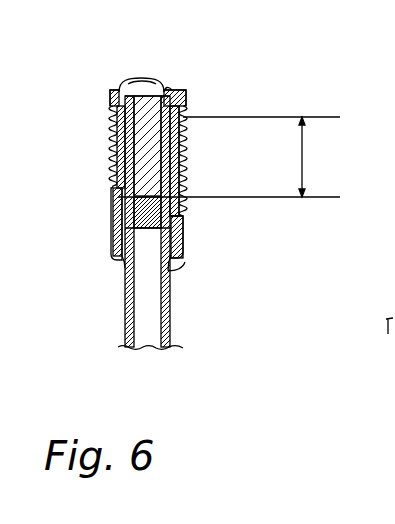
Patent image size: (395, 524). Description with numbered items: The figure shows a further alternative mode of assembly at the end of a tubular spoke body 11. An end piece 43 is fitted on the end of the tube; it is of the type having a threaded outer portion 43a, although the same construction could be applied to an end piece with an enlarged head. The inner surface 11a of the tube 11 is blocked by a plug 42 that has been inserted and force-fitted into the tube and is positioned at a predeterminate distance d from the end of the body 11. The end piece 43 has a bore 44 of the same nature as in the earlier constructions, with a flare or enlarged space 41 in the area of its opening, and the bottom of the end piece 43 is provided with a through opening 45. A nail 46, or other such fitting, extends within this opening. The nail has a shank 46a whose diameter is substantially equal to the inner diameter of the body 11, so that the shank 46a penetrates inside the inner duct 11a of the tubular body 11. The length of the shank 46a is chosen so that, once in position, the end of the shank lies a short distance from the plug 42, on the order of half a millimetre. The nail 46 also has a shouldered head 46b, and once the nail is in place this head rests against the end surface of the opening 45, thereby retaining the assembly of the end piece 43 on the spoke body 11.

The tubular spoke body 11 is at (171, 292).
The inner surface 11a is at (180, 343).
The flare 41 is at (127, 272).
The plug 42 is at (182, 218).
The end piece 43 is at (184, 190).
The threaded outer portion 43a is at (186, 143).
The bore 44 is at (130, 216).
The through opening 45 is at (160, 76).
The nail 46 is at (128, 139).
The shank 46a is at (114, 190).
The shouldered head 46b is at (143, 81).
The predeterminate distance d is at (261, 157).